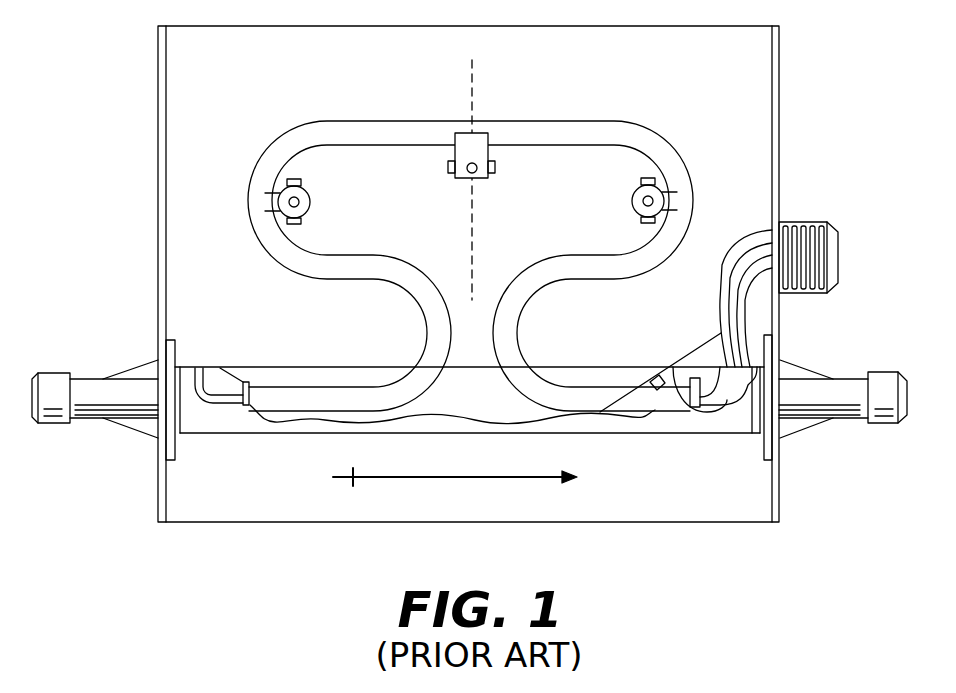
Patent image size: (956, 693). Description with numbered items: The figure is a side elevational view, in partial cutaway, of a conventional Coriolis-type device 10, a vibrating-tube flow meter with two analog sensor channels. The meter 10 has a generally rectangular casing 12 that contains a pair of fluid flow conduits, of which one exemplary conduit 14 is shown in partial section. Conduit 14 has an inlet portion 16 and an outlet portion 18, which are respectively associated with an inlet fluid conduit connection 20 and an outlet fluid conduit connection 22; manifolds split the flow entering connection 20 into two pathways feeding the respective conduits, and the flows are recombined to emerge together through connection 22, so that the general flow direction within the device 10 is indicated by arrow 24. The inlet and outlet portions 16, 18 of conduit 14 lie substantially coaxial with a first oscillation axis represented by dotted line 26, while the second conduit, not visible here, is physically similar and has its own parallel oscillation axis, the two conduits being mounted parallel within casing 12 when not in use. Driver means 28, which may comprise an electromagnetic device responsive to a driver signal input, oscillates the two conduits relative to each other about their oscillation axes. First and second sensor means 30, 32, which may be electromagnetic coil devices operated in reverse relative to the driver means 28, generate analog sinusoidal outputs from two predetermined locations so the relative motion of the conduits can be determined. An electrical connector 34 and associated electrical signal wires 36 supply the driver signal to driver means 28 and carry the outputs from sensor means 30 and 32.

The Coriolis-type device 10 is at (467, 271).
The casing 12 is at (780, 131).
The fluid flow conduit 14 is at (554, 117).
The inlet portion 16 is at (234, 363).
The outlet portion 18 is at (680, 404).
The inlet fluid conduit connection 20 is at (66, 436).
The outlet fluid conduit connection 22 is at (883, 427).
The arrow 24 is at (449, 478).
The first oscillation axis 26 is at (473, 222).
The driver means 28 is at (490, 150).
The first sensor means 30 is at (311, 201).
The second sensor means 32 is at (631, 201).
The electrical connector 34 is at (826, 218).
The electrical signal wires 36 is at (709, 293).